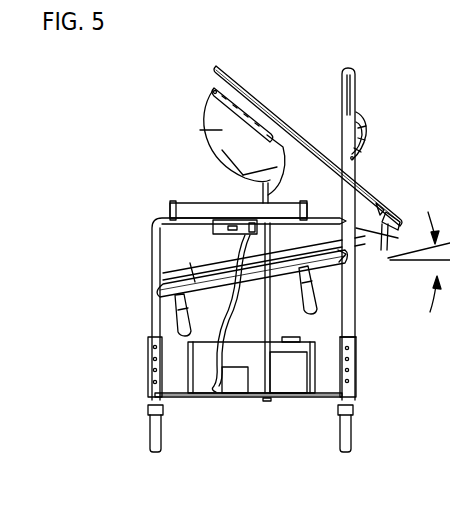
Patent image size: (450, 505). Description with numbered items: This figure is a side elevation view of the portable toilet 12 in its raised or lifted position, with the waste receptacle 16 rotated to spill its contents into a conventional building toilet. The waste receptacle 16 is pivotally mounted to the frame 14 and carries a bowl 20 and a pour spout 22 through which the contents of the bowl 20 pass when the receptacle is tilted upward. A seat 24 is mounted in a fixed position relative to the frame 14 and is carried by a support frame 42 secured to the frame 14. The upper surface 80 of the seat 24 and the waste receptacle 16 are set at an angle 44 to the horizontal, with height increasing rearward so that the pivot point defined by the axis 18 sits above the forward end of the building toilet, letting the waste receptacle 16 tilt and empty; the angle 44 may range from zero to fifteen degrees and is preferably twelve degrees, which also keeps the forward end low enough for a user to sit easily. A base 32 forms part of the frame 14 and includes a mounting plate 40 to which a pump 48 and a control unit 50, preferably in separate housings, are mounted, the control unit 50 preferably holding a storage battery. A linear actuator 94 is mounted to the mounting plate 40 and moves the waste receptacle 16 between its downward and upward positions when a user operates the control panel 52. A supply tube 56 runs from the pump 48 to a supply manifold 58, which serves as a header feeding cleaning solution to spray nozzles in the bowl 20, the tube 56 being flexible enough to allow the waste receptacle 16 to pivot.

The portable toilet 12 is at (130, 179).
The frame 14 is at (356, 338).
The waste receptacle 16 is at (272, 112).
The axis 18 is at (404, 217).
The bowl 20 is at (217, 133).
The pour spout 22 is at (400, 216).
The seat 24 is at (165, 279).
The base 32 is at (147, 394).
The mounting plate 40 is at (205, 398).
The support frame 42 is at (180, 312).
The angle 44 is at (431, 276).
The pump 48 is at (232, 380).
The control unit 50 is at (285, 378).
The control panel 52 is at (166, 218).
The supply tube 56 is at (262, 175).
The supply manifold 58 is at (213, 93).
The upper surface 80 is at (190, 264).
The linear actuator 94 is at (236, 324).